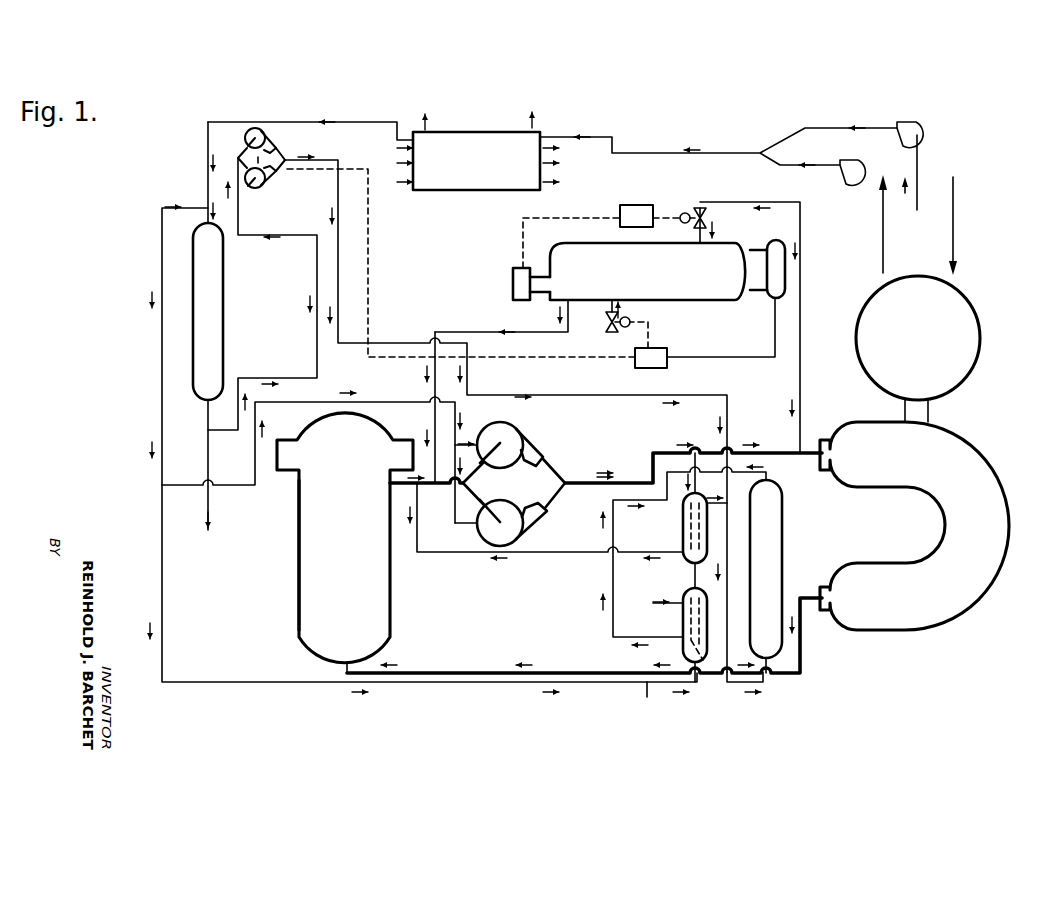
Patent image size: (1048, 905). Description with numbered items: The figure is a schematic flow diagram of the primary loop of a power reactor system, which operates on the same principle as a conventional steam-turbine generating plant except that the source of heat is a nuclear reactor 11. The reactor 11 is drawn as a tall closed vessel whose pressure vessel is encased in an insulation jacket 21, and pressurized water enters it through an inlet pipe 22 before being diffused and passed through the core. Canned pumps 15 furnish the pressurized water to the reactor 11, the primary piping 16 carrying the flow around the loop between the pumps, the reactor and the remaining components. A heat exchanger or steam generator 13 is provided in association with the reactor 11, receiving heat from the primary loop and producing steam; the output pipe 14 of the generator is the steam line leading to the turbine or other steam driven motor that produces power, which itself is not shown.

The nuclear reactor 11 is at (292, 600).
The heat exchanger or steam generator 13 is at (1015, 427).
The output pipe 14 is at (882, 236).
The canned pumps 15 is at (513, 507).
The primary piping 16 is at (435, 483).
The insulation jacket 21 is at (299, 556).
The inlet pipe 22 is at (428, 672).